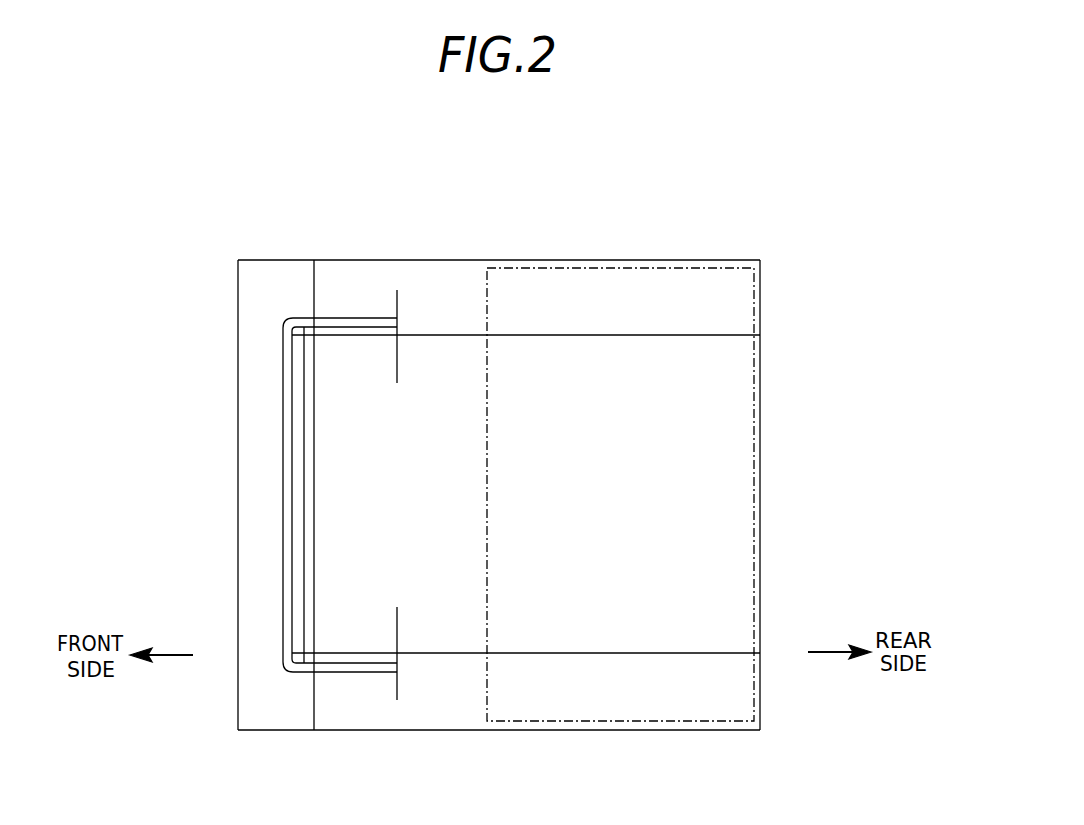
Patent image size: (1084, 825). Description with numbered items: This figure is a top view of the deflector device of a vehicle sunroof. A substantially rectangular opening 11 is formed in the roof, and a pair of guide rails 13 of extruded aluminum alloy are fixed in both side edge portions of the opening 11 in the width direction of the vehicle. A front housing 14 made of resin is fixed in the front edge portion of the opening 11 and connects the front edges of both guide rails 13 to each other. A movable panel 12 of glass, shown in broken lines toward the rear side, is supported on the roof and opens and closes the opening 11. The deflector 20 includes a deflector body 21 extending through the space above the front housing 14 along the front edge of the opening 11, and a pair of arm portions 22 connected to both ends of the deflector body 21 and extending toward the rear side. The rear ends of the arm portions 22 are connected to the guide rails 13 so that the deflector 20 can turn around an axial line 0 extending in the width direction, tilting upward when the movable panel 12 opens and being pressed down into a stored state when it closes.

The front housing 14 is at (246, 272).
The guide rails 13 is at (394, 268).
The opening 11 is at (453, 511).
The movable panel 12 is at (754, 444).
The deflector 20 is at (315, 466).
The deflector body 21 is at (283, 363).
The arm portions 22 is at (352, 328).
The axial line 0 is at (397, 308).